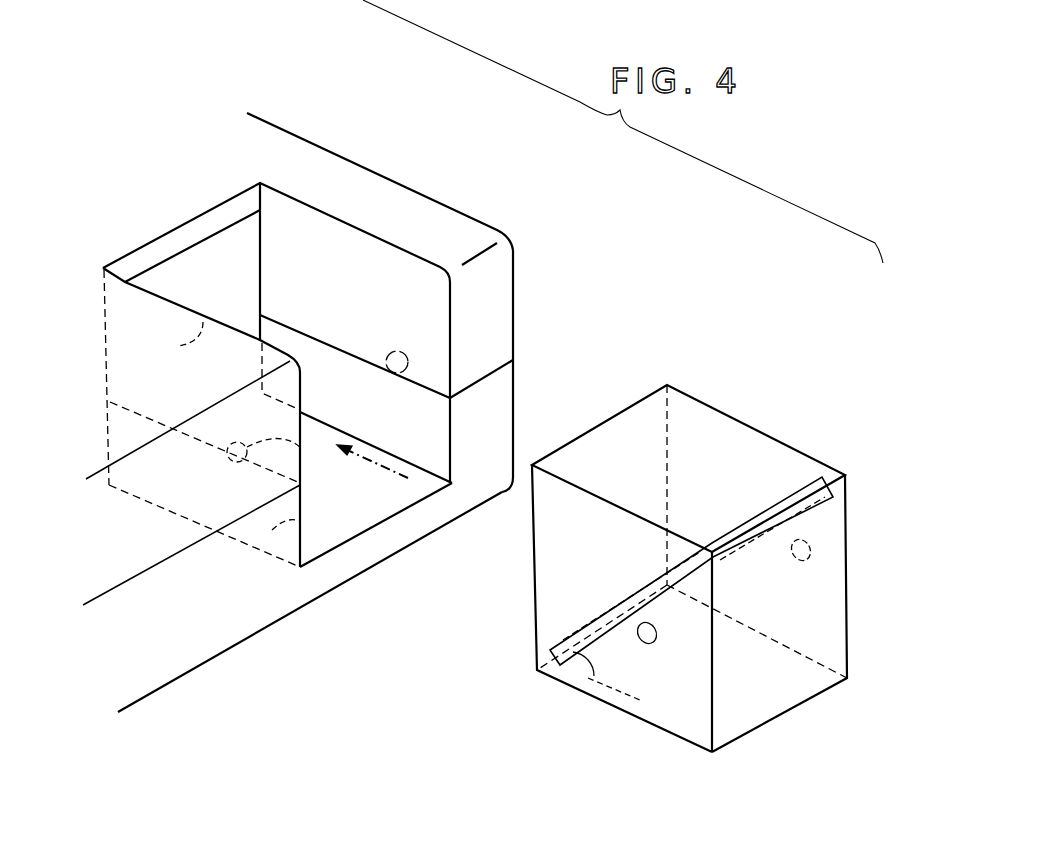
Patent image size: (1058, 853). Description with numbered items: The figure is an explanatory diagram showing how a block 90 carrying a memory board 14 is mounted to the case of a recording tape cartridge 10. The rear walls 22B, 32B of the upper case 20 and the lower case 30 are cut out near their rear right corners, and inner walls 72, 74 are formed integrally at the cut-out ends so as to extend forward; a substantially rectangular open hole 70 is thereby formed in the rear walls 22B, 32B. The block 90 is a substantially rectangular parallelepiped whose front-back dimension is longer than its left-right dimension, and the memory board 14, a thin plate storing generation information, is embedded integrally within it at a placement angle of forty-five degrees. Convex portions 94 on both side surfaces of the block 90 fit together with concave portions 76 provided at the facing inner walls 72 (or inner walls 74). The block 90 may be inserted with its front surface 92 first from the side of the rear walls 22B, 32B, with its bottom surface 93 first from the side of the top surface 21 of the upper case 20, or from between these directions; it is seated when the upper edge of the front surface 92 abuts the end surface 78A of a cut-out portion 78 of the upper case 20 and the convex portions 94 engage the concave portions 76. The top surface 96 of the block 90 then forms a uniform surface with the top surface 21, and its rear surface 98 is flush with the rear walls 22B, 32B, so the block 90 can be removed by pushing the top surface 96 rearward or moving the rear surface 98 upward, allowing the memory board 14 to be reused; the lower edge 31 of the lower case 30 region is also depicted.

The recording tape cartridge 10 is at (290, 128).
The memory board 14 is at (737, 527).
The upper case 20 is at (383, 175).
The top surface 21 is at (288, 182).
The rear wall 22B is at (101, 513).
The lower case 30 is at (398, 550).
The base plate edge 31 is at (360, 570).
The rear wall 32B is at (135, 660).
The open hole 70 is at (358, 487).
The inner wall 72 is at (420, 288).
The inner wall 74 is at (430, 418).
The concave portion 76 is at (392, 372).
The cut-out portion 78 is at (177, 226).
The end surface 78A is at (217, 222).
The block 90 is at (820, 600).
The front surface 92 is at (570, 580).
The bottom surface 93 is at (728, 703).
The convex portion 94 is at (810, 545).
The top surface 96 is at (708, 442).
The rear surface 98 is at (762, 681).